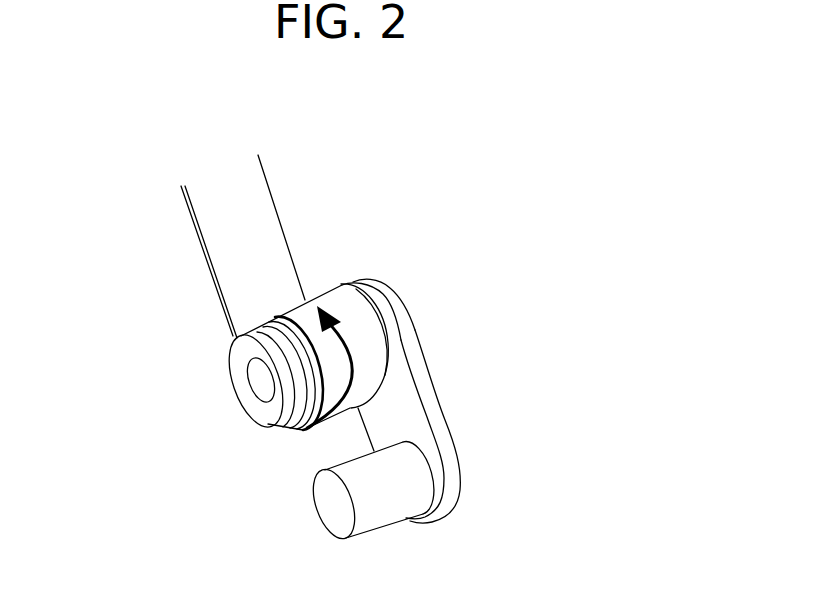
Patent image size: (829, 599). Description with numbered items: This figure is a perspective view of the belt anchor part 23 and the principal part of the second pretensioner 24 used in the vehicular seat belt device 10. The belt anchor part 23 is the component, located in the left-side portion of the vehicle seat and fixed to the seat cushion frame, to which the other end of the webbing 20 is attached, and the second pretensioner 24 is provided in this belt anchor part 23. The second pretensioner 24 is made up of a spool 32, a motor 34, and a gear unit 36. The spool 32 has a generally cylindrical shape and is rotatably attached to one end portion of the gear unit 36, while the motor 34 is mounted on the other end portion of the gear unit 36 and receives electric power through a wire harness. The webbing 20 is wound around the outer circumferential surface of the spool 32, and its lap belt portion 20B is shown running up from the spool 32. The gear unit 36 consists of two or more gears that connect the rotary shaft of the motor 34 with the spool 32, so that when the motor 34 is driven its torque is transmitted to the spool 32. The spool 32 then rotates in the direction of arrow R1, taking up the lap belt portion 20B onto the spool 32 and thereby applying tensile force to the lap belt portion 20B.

The vehicular seat belt device 10 is at (341, 320).
The webbing 20 is at (274, 211).
The lap belt portion 20B is at (284, 220).
The belt anchor part 23 is at (341, 320).
The second pretensioner 24 is at (445, 390).
The spool 32 is at (238, 392).
The motor 34 is at (307, 513).
The gear unit 36 is at (450, 430).
The direction of arrow R1 is at (347, 380).